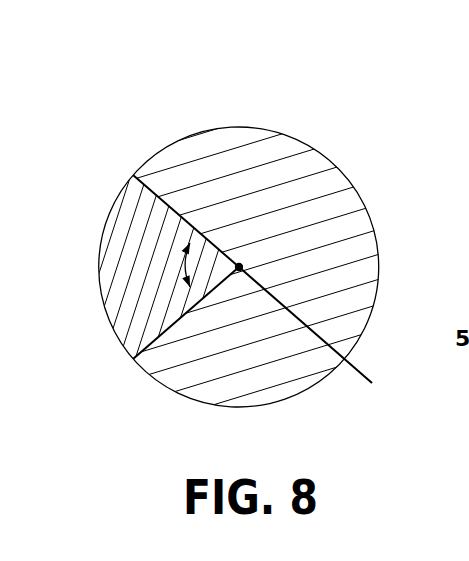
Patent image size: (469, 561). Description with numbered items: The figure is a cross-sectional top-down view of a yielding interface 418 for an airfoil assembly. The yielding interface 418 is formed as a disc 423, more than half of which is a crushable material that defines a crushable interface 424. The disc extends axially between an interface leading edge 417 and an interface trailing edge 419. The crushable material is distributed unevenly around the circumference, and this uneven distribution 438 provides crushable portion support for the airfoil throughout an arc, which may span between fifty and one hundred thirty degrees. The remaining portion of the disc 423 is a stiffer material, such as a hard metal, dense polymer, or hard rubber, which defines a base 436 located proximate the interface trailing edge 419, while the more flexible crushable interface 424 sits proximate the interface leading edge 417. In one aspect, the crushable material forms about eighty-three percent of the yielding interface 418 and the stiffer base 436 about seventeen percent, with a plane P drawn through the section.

The yielding interface 418 is at (241, 257).
The interface leading edge 417 is at (100, 270).
The interface trailing edge 419 is at (380, 277).
The disc 423 is at (261, 271).
The crushable interface 424 is at (315, 200).
The base 436 is at (150, 250).
The uneven distribution 438 is at (193, 180).
The plane P is at (314, 337).